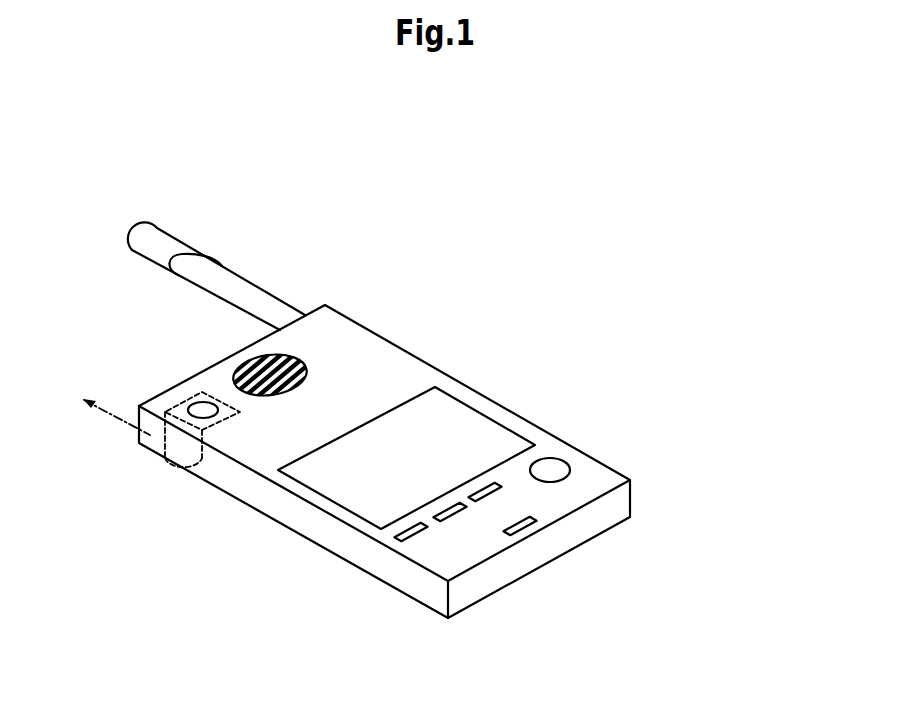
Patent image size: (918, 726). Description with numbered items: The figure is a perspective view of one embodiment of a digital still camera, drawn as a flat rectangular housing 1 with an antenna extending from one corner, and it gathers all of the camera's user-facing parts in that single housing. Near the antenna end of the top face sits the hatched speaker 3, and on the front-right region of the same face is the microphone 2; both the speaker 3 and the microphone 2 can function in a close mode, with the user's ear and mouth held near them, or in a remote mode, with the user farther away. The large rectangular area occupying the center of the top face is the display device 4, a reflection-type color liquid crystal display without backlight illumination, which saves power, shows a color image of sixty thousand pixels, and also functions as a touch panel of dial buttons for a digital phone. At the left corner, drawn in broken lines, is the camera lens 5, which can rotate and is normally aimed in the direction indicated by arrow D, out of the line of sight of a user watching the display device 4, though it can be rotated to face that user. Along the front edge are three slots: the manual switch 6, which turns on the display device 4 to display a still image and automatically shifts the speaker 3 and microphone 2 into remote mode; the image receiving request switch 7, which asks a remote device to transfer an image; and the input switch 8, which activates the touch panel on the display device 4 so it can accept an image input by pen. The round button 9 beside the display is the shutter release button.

The portable terminal body 1 is at (382, 355).
The microphone 2 is at (520, 528).
The speaker 3 is at (243, 360).
The display device 4 is at (480, 425).
The camera lens 5 is at (218, 410).
The manual switch 6 is at (405, 535).
The image receiving request switch 7 is at (450, 515).
The input switch 8 is at (495, 488).
The button 9 is at (566, 468).